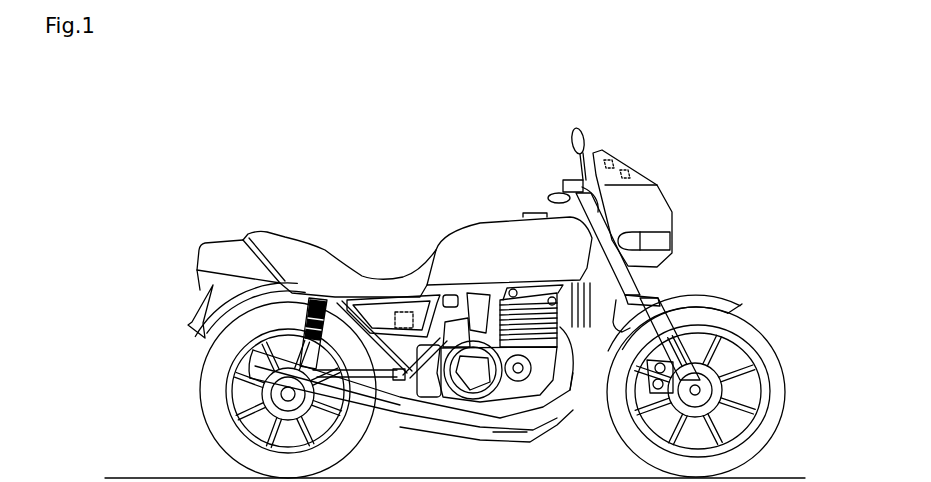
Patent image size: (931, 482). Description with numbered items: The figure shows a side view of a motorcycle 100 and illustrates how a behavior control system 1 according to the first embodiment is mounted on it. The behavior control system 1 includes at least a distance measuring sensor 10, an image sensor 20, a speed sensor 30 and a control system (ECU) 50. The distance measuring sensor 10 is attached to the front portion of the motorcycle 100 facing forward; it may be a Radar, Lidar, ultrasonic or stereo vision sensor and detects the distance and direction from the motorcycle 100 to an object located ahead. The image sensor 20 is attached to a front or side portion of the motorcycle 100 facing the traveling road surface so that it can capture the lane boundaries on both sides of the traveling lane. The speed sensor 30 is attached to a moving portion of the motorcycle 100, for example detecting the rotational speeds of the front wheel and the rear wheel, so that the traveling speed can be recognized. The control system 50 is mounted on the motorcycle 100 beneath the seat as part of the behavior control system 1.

The motorcycle 100 is at (804, 93).
The behavior control system 1 is at (302, 147).
The distance measuring sensor 10 is at (606, 162).
The image sensor 20 is at (632, 172).
The speed sensor 30 is at (238, 343).
The control system (ECU) 50 is at (404, 307).